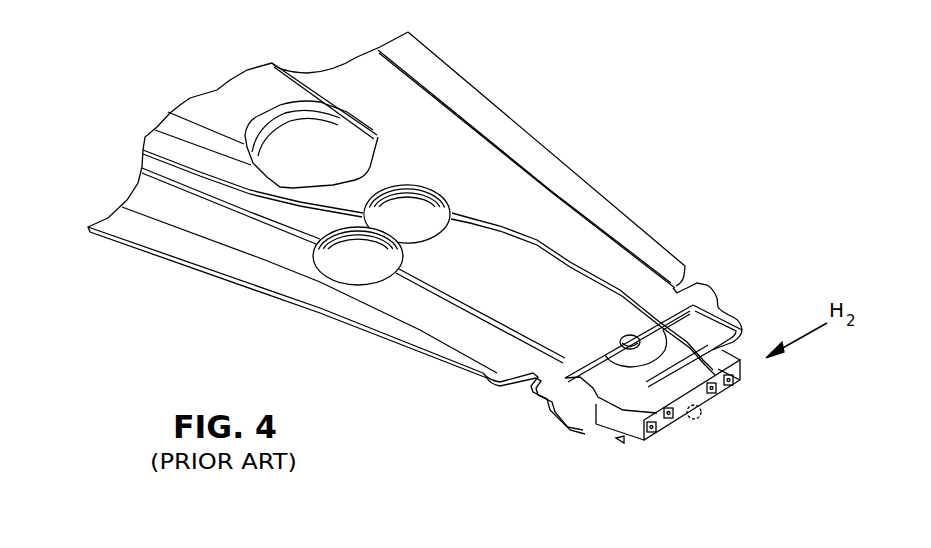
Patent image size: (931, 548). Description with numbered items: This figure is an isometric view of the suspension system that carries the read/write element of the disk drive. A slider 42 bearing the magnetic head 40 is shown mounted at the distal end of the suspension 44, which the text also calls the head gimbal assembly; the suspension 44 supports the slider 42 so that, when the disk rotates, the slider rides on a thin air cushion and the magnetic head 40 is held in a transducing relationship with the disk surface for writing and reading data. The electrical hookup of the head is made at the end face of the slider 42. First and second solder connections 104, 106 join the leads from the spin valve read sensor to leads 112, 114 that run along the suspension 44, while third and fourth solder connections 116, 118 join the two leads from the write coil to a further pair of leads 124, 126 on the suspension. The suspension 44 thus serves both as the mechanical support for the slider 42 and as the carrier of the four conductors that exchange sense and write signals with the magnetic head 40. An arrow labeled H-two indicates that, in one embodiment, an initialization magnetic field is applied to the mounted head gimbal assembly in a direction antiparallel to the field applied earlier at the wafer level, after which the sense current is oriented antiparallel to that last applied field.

The magnetic head 40 is at (703, 422).
The slider 42 is at (596, 434).
The suspension 44 is at (548, 149).
The first solder connection 104 is at (637, 440).
The second solder connection 106 is at (733, 378).
The lead 112 is at (430, 293).
The lead 114 is at (603, 278).
The third solder connection 116 is at (662, 432).
The fourth solder connection 118 is at (718, 402).
The lead 124 is at (472, 308).
The lead 126 is at (528, 247).